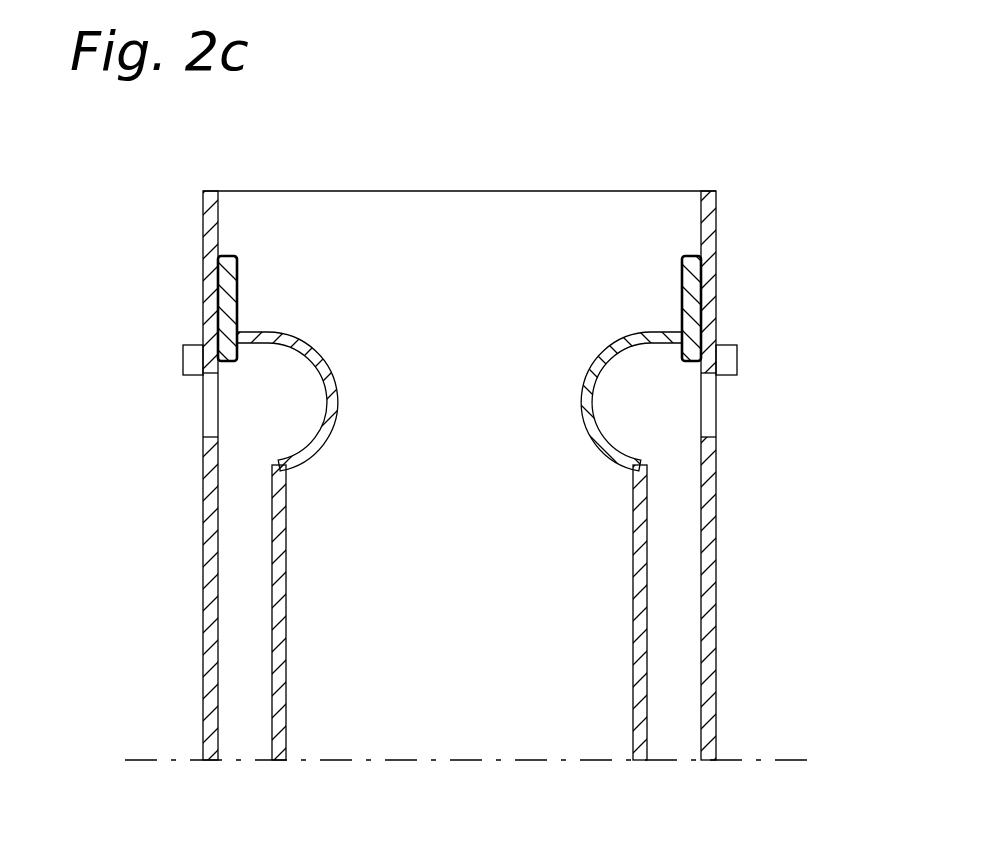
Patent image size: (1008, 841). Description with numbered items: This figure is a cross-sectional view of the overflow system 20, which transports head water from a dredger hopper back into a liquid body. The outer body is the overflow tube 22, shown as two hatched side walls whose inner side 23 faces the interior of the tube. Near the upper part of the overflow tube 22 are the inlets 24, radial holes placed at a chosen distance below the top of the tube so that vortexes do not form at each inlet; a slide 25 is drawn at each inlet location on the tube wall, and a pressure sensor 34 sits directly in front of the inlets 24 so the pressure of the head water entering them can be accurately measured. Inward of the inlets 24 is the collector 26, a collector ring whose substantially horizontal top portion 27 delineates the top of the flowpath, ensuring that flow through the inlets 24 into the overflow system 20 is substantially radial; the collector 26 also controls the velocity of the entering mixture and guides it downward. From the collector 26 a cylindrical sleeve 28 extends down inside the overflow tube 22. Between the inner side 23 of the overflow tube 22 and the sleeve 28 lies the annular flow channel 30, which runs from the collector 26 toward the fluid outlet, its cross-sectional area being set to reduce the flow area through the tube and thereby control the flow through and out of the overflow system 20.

The overflow system 20 is at (657, 168).
The overflow tube 22 is at (213, 512).
The inner side 23 is at (217, 572).
The inlets 24 is at (708, 410).
The slide 25 is at (228, 294).
The collector 26 is at (459, 376).
The top portion 27 is at (267, 337).
The sleeve 28 is at (277, 668).
The flow channel 30 is at (245, 693).
The pressure sensor 34 is at (183, 359).